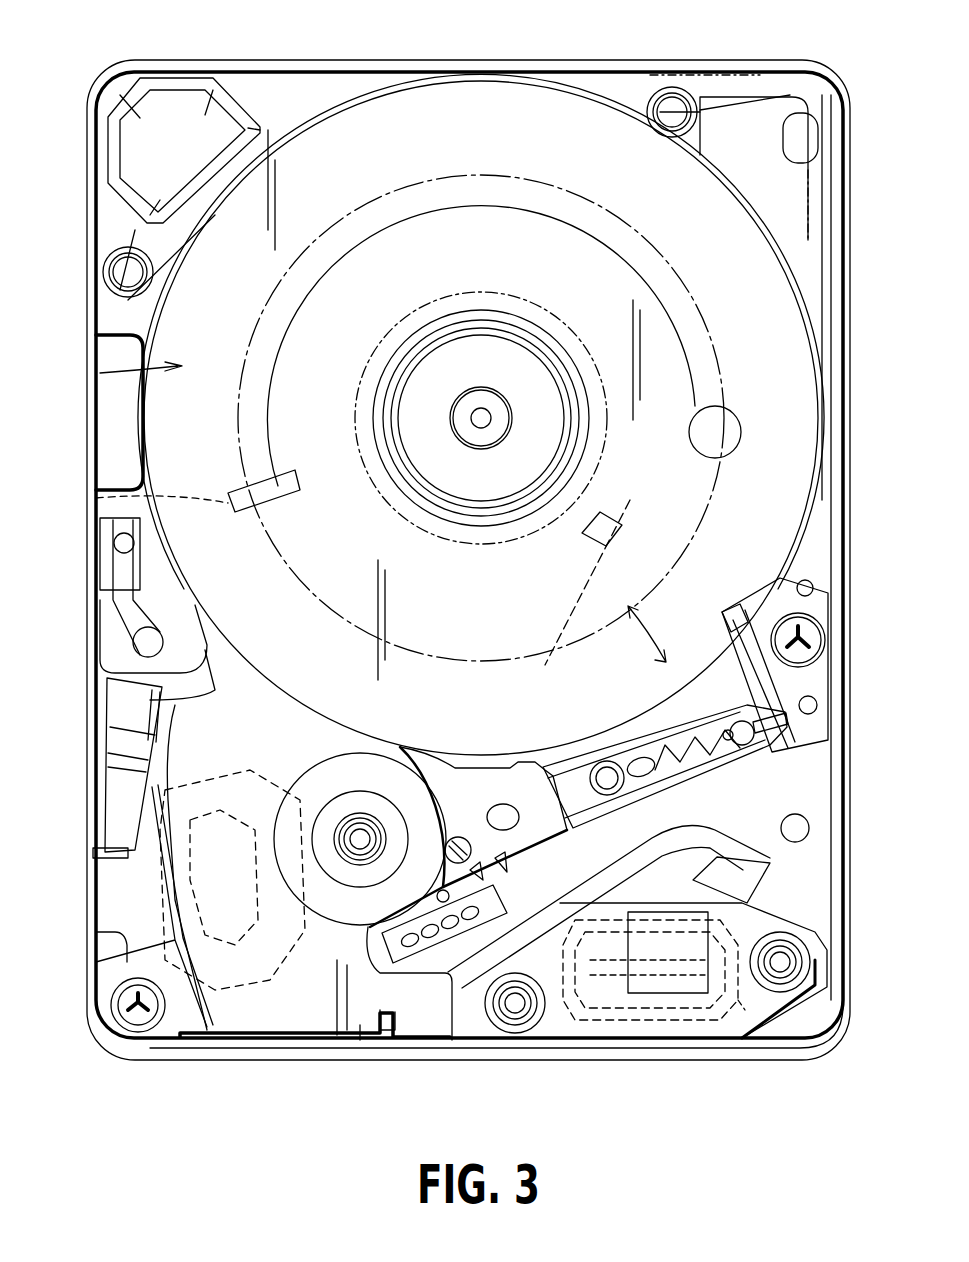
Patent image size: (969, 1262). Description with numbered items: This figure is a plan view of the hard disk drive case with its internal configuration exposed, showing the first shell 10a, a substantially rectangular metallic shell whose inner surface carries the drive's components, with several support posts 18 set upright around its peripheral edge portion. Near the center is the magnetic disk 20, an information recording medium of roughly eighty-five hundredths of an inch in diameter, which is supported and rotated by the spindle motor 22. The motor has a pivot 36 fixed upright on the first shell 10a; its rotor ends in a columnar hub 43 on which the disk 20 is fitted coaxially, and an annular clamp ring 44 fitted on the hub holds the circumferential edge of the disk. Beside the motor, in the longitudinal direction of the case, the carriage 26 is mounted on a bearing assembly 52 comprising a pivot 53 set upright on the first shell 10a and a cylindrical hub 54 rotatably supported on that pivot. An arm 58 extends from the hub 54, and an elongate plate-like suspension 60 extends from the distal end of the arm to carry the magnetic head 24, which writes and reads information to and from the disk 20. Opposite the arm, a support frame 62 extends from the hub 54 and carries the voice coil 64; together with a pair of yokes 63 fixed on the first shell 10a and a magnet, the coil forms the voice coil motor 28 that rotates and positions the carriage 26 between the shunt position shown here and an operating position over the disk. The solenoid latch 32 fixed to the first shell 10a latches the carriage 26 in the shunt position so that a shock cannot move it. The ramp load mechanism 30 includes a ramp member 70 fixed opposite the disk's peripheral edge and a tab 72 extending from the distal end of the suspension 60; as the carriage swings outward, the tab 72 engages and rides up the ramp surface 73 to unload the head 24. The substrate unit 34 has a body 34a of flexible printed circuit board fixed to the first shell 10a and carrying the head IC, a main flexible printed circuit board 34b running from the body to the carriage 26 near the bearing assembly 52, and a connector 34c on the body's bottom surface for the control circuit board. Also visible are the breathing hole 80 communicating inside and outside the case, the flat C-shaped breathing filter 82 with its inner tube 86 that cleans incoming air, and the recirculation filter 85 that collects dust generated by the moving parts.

The first shell 10a is at (305, 85).
The support post 18 is at (672, 112).
The magnetic disk 20 is at (805, 355).
The spindle motor 22 is at (533, 308).
The magnetic head 24 is at (727, 730).
The carriage 26 is at (468, 784).
The voice coil motor 28 is at (262, 998).
The ramp load mechanism 30 is at (140, 500).
The solenoid latch 32 is at (125, 793).
The substrate unit 34 is at (625, 1018).
The body 34a is at (680, 1022).
The main flexible printed circuit board 34b is at (575, 895).
The connector 34c is at (732, 1012).
The pivot 36 is at (478, 420).
The hub 43 is at (450, 355).
The clamp ring 44 is at (570, 375).
The bearing assembly 52 is at (380, 774).
The pivot 53 is at (366, 833).
The hub 54 is at (345, 770).
The arm 58 is at (500, 780).
The suspension 60 is at (625, 760).
The support frame 62 is at (310, 967).
The yoke 63 is at (360, 1027).
The voice coil 64 is at (222, 955).
The ramp member 70 is at (765, 590).
The tab 72 is at (770, 730).
The ramp surface 73 is at (735, 605).
The breathing hole 80 is at (742, 432).
The breathing filter 82 is at (100, 373).
The recirculation filter 85 is at (778, 100).
The inner tube 86 is at (488, 170).